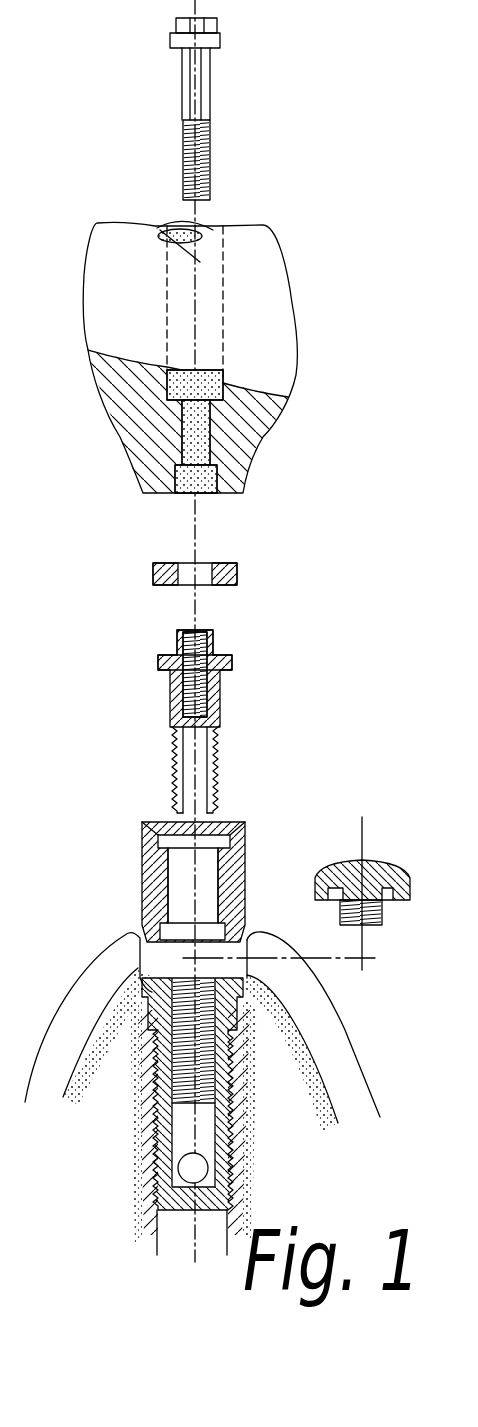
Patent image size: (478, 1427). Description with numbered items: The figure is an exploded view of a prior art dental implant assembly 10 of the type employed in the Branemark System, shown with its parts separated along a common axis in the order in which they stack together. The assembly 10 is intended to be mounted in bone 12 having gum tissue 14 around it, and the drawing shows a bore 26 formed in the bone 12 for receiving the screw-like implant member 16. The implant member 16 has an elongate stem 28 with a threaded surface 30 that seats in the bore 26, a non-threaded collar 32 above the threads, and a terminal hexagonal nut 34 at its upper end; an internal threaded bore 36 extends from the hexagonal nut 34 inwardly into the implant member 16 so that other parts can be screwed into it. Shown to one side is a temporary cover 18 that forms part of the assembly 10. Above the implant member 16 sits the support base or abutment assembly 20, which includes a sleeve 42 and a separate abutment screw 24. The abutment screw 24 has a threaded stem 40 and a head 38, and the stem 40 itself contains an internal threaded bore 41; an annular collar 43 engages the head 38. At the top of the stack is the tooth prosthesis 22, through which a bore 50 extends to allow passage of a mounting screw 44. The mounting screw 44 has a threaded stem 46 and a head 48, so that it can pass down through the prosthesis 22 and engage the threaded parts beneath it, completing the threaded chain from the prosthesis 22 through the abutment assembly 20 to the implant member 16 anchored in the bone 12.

The dental implant assembly 10 is at (112, 832).
The bone 12 is at (248, 1147).
The gum tissue 14 is at (329, 1032).
The implant member 16 is at (207, 1216).
The temporary cover 18 is at (387, 862).
The abutment assembly 20 is at (250, 838).
The tooth prosthesis 22 is at (302, 366).
The abutment screw 24 is at (221, 705).
The bore 26 is at (153, 1133).
The elongate stem 28 is at (152, 1222).
The threaded surface 30 is at (155, 1175).
The non-threaded collar 32 is at (153, 1008).
The hexagonal nut 34 is at (140, 975).
The internal threaded bore 36 is at (206, 1058).
The head 38 is at (233, 665).
The threaded stem 40 is at (219, 770).
The internal threaded bore 41 is at (202, 632).
The sleeve 42 is at (246, 905).
The annular collar 43 is at (240, 575).
The mounting screw 44 is at (214, 97).
The threaded stem 46 is at (212, 155).
The head 48 is at (222, 44).
The bore 50 is at (218, 232).